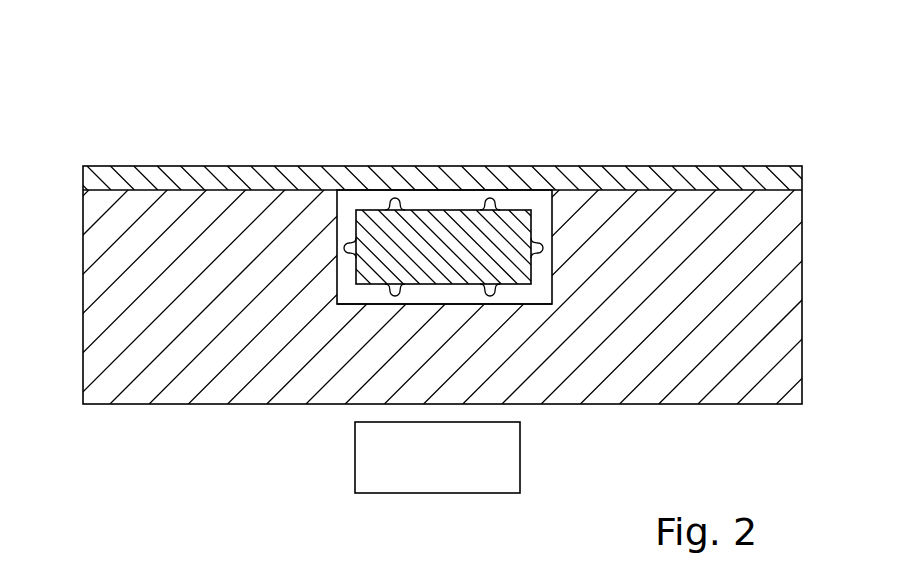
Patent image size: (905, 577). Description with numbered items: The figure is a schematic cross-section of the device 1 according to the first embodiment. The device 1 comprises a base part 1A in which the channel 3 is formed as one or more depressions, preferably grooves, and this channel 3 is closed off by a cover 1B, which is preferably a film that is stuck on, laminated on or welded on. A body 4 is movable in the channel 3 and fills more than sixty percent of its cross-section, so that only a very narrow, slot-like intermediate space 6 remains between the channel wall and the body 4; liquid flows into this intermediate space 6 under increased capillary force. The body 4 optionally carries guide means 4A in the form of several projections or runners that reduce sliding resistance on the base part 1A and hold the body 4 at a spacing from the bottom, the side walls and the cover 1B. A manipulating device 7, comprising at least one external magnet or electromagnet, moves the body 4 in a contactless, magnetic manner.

The device 1 is at (97, 120).
The base part 1A is at (152, 382).
The cover 1B is at (158, 183).
The channel 3 is at (548, 222).
The body 4 is at (437, 232).
The guide means 4A is at (344, 249).
The intermediate space 6 is at (513, 293).
The manipulating device 7 is at (442, 470).